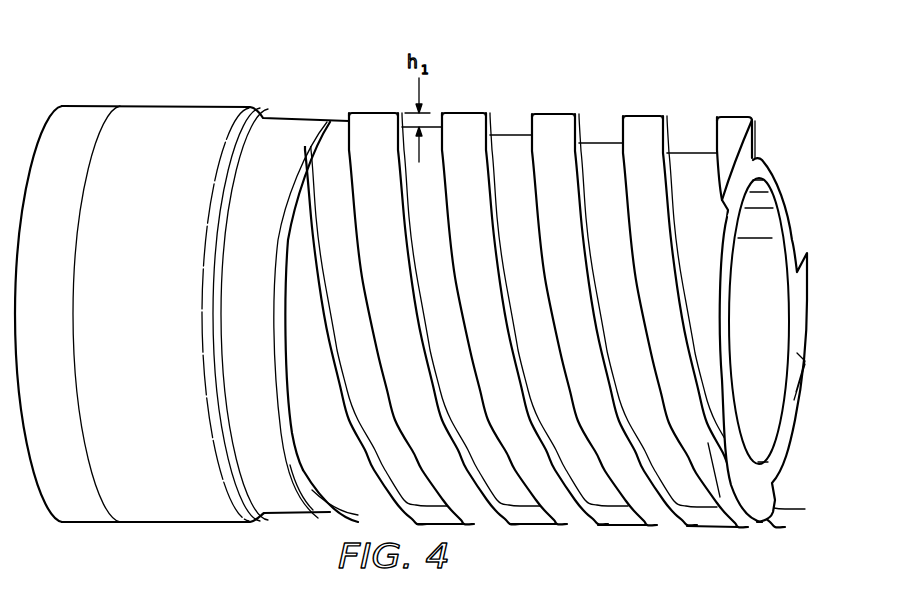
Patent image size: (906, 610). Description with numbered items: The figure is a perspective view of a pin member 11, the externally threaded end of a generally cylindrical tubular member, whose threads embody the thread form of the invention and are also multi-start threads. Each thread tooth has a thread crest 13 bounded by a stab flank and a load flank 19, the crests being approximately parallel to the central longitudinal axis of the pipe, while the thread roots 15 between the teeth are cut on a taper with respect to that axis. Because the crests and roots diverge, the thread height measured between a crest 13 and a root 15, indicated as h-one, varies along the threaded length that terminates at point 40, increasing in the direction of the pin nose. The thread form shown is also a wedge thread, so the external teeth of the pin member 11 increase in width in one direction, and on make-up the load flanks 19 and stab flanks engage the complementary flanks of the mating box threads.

The pin member 11 is at (264, 48).
The thread crest 13 is at (731, 124).
The thread root 15 is at (757, 138).
The load flank 19 is at (714, 134).
The point 40 is at (768, 172).